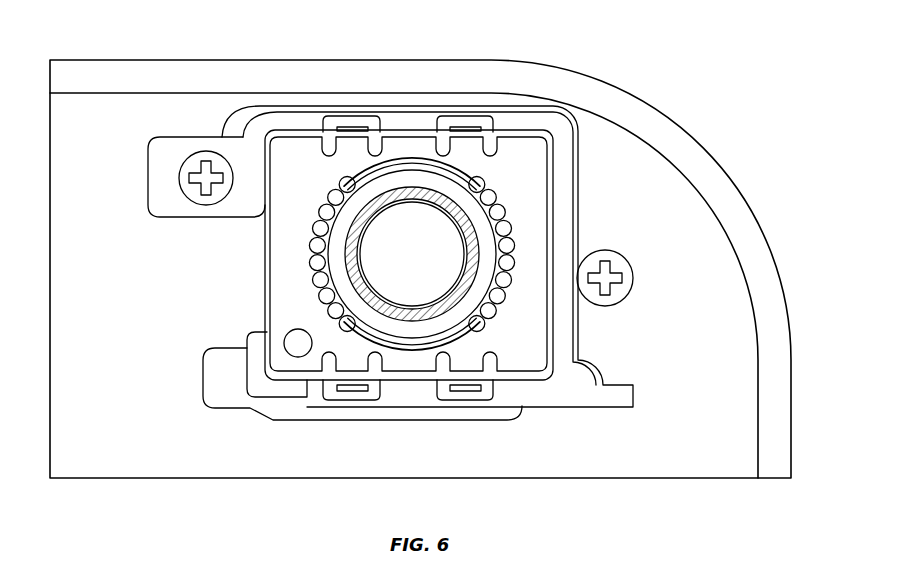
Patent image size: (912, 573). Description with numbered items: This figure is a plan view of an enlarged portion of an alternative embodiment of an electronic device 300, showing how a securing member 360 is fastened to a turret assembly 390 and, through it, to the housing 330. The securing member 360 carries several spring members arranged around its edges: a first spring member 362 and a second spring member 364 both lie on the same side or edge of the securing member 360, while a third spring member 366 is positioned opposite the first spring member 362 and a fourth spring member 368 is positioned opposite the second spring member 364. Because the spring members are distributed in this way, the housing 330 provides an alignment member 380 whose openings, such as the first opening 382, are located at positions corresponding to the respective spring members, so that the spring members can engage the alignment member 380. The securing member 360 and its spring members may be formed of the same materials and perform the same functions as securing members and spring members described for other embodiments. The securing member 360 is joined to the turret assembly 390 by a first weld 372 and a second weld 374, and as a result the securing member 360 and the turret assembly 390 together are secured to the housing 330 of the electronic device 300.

The electronic device 300 is at (128, 44).
The housing 330 is at (136, 287).
The securing member 360 is at (267, 283).
The first spring member 362 is at (341, 127).
The second spring member 364 is at (459, 161).
The third spring member 366 is at (358, 386).
The fourth spring member 368 is at (484, 385).
The first weld 372 is at (294, 186).
The second weld 374 is at (577, 152).
The alignment member 380 is at (578, 172).
The first opening 382 is at (388, 112).
The turret assembly 390 is at (501, 179).